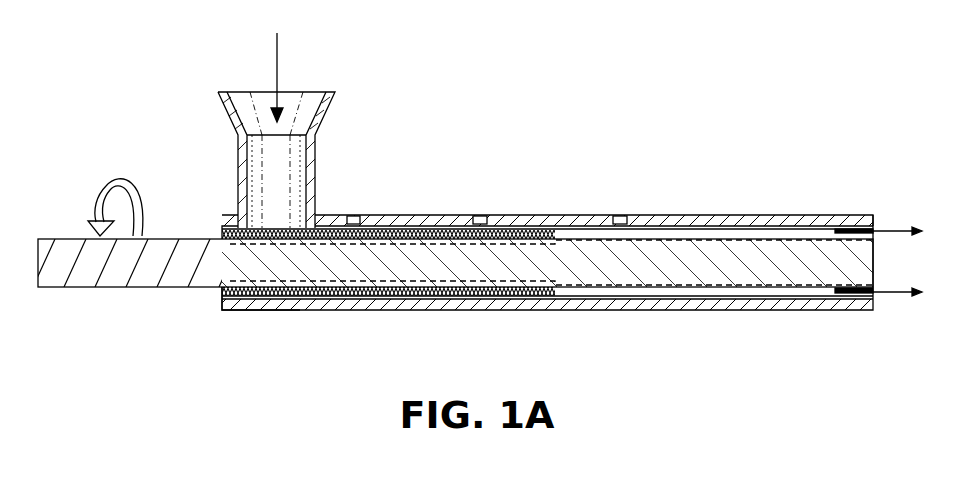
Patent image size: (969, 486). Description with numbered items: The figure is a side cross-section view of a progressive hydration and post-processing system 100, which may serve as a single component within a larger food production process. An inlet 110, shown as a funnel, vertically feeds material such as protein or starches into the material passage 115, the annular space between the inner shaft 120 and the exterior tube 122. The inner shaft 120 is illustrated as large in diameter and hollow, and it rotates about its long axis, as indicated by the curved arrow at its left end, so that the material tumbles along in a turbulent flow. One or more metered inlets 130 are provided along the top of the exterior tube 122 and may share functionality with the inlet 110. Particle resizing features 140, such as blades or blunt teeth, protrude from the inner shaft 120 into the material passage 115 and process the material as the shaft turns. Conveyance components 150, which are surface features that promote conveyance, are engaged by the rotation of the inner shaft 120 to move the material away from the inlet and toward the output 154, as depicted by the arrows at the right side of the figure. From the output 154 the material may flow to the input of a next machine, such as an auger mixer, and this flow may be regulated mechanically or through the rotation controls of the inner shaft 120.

The progressive hydration and post-processing system 100 is at (826, 144).
The inlet 110 is at (302, 110).
The material passage 115 is at (712, 302).
The inner shaft 120 is at (138, 270).
The exterior tube 122 is at (233, 302).
The metered inlets 130 is at (620, 216).
The particle resizing features 140 is at (290, 298).
The conveyance components 150 is at (850, 270).
The output 154 is at (887, 218).